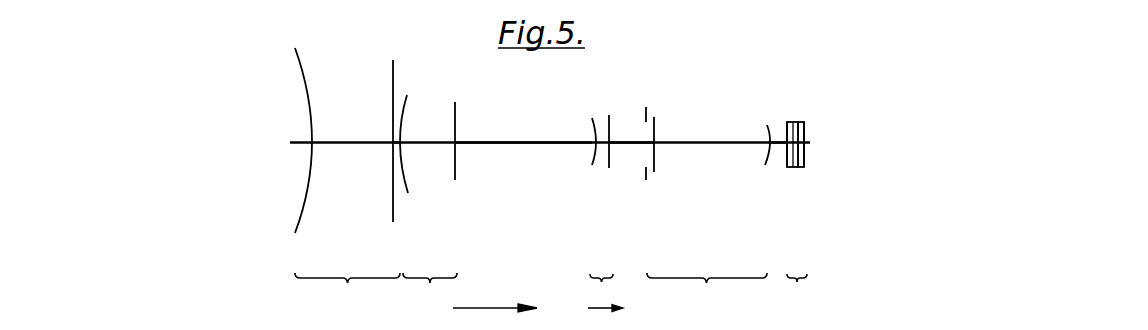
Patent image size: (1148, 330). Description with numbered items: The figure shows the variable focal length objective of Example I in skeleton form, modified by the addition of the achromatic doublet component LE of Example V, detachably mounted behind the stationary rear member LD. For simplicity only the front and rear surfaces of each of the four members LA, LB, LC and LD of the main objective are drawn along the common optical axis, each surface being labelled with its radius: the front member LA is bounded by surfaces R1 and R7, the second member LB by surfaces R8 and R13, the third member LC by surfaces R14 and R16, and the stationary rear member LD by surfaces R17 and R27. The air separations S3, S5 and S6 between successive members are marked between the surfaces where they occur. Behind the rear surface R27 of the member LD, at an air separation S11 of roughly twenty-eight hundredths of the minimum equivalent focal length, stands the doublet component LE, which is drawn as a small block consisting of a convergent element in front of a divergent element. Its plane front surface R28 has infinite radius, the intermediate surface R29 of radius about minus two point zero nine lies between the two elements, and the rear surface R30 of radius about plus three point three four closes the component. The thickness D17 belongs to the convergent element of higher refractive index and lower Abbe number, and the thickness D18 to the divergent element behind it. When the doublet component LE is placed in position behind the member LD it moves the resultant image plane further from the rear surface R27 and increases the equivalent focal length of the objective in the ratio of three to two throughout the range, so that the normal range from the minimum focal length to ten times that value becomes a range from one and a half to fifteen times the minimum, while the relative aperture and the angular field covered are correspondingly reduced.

The first lens surface radius -5.0480 R1 is at (310, 128).
The seventh lens surface radius +17.1609 R7 is at (390, 128).
The eighth lens surface radius +2.7753 R8 is at (403, 112).
The thirteenth lens surface radius +5.7801 R13 is at (457, 125).
The fourteenth lens surface radius -1.3021 R14 is at (592, 133).
The sixteenth lens surface radius +9.8892 R16 is at (609, 119).
The seventeenth lens surface radius +13.8889 R17 is at (655, 127).
The rear surface of the stationary rear member R27 is at (767, 137).
The front surface of the doublet component R28 is at (787, 135).
The intermediate surface of the doublet component R29 is at (807, 128).
The rear surface of the doublet component R30 is at (803, 137).
The air space 3, 0.030 S3 is at (402, 148).
The air space 5, 2.544 S5 is at (532, 145).
The air space 6, 0.689 S6 is at (635, 145).
The air separation between rear member and doublet S11 is at (777, 145).
The thickness of the convergent element of the doublet D17 is at (794, 167).
The thickness of the divergent element of the doublet D18 is at (800, 167).
The front member of the objective LA is at (347, 292).
The second member of the objective LB is at (430, 292).
The third member of the objective LC is at (601, 291).
The stationary rear member of the objective LD is at (707, 292).
The achromatic doublet component LE is at (797, 292).